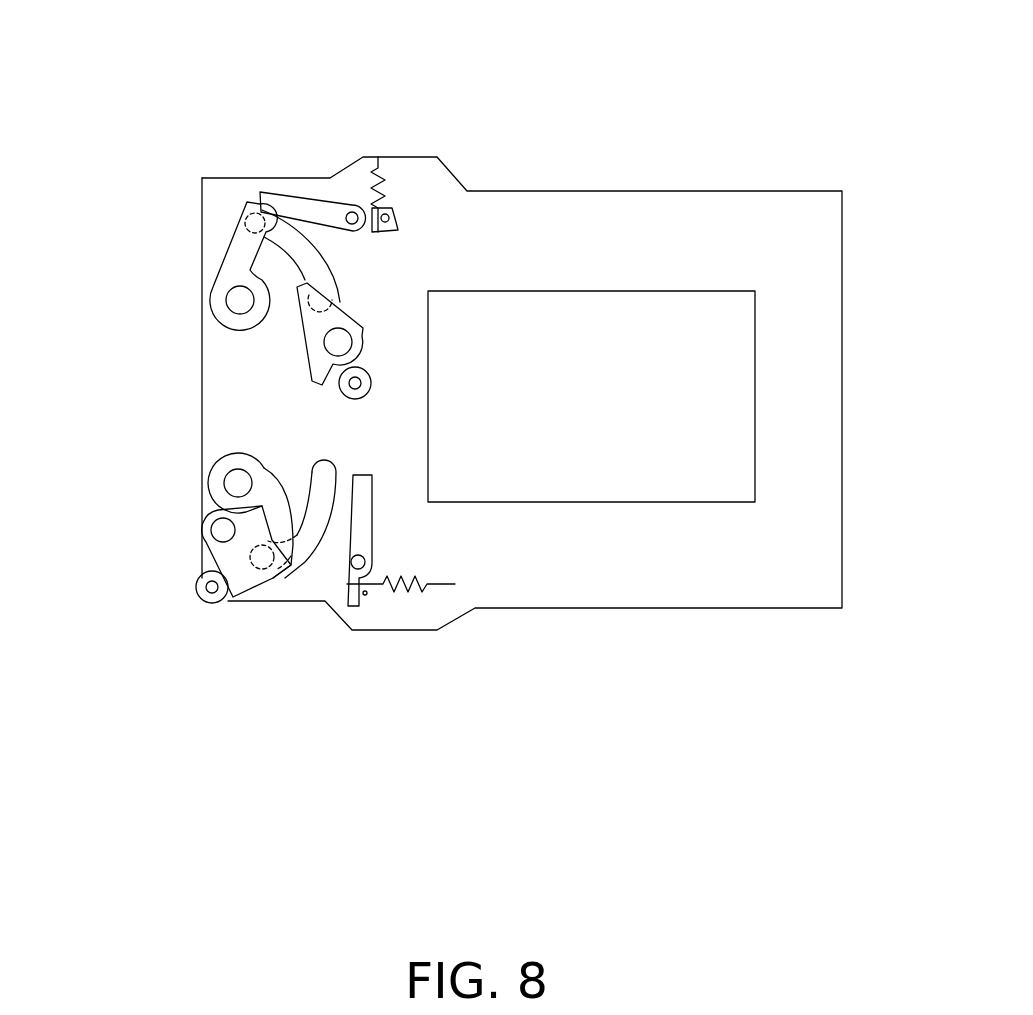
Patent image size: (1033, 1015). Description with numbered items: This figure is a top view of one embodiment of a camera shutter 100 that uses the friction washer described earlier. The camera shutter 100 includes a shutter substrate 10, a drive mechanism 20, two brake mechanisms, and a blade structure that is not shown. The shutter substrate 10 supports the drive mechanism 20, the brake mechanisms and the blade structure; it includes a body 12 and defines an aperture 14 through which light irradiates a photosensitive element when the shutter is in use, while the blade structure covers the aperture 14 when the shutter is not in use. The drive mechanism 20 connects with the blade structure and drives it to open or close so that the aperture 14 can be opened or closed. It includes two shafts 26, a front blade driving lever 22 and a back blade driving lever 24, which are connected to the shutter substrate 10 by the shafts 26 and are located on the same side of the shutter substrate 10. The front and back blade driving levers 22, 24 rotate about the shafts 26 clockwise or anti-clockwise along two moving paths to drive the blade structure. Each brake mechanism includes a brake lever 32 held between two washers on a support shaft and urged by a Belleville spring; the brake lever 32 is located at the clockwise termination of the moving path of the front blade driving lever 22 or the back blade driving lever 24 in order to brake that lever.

The camera shutter 100 is at (610, 78).
The shutter substrate 10 is at (505, 694).
The body 12 is at (507, 594).
The aperture 14 is at (555, 502).
The drive mechanism 20 is at (168, 393).
The front blade driving lever 22 is at (237, 260).
The back blade driving lever 24 is at (272, 488).
The shaft 26 is at (237, 307).
The brake lever 32 is at (343, 322).